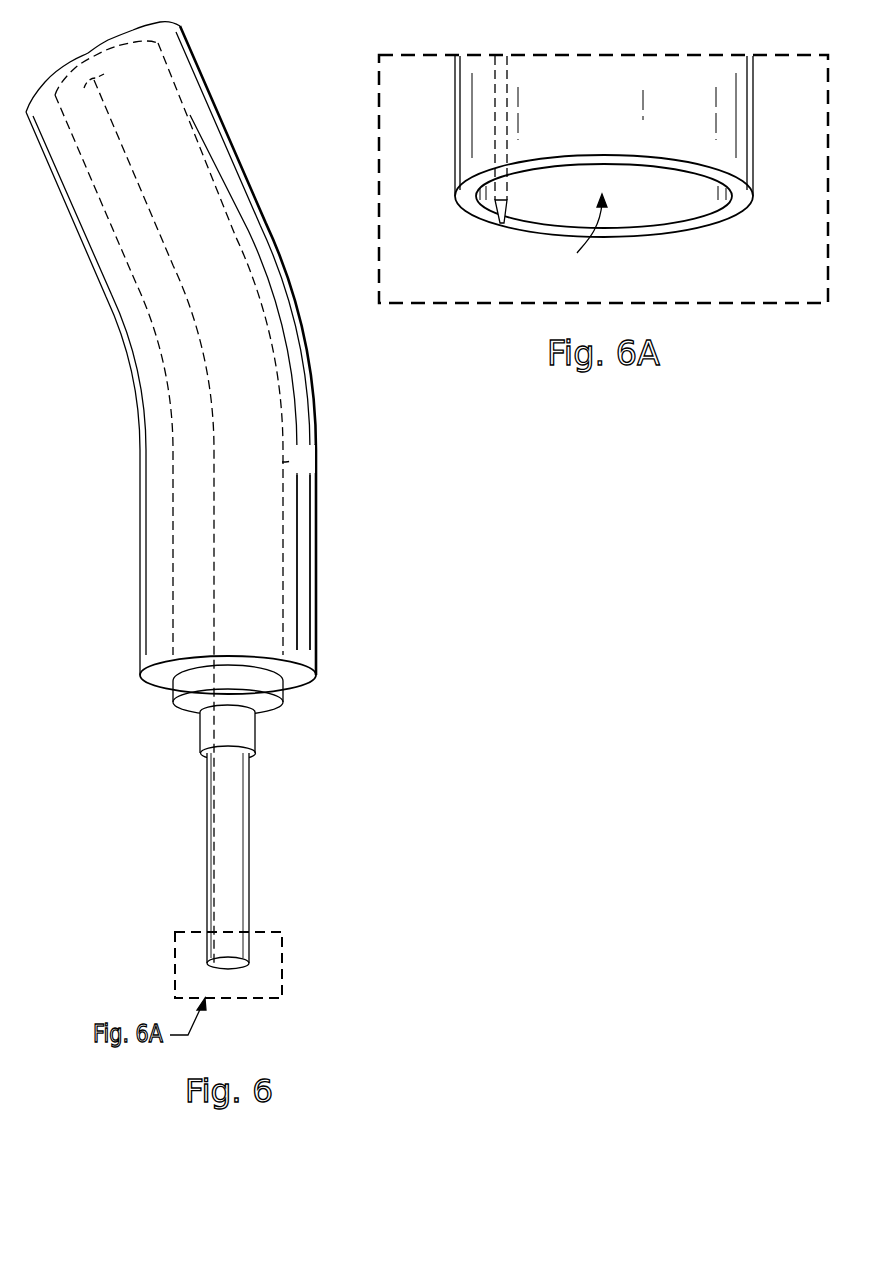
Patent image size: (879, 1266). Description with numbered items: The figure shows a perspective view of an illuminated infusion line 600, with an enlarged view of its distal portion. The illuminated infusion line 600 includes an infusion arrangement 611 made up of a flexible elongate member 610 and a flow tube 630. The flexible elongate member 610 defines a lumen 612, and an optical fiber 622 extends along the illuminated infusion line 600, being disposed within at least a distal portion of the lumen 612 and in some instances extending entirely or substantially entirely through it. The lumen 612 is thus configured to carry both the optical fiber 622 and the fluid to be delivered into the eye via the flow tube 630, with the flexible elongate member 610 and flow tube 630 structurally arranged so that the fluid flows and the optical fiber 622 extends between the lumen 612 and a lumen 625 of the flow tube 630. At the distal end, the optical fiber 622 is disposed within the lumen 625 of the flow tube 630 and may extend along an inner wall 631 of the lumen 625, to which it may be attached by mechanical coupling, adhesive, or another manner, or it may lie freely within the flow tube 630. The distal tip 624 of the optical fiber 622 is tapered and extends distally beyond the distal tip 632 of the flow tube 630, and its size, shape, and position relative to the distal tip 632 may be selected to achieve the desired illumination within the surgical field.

In FIG. 6, the illuminated infusion line 600 is at (265, 495).
In FIG. 6, the flexible elongate member 610 is at (317, 570).
In FIG. 6, the infusion arrangement 611 is at (142, 712).
In FIG. 6, the lumen 612 is at (317, 445).
In FIG. 6, the optical fiber 622 is at (213, 527).
In FIG. 6A, the optical fiber 622 is at (508, 188).
In FIG. 6A, the distal tip 624 is at (507, 210).
In FIG. 6A, the lumen 625 is at (584, 239).
In FIG. 6, the flow tube 630 is at (248, 848).
In FIG. 6A, the flow tube 630 is at (455, 127).
In FIG. 6A, the inner wall 631 is at (655, 208).
In FIG. 6A, the distal tip 632 is at (702, 222).